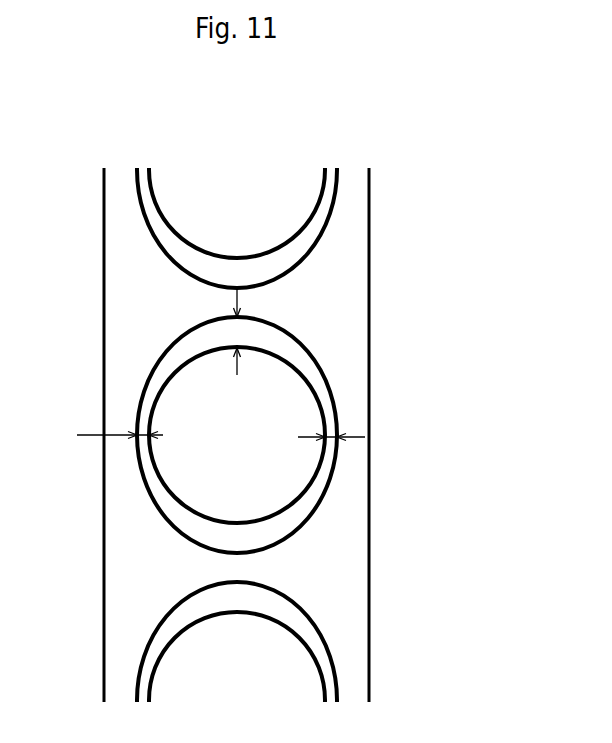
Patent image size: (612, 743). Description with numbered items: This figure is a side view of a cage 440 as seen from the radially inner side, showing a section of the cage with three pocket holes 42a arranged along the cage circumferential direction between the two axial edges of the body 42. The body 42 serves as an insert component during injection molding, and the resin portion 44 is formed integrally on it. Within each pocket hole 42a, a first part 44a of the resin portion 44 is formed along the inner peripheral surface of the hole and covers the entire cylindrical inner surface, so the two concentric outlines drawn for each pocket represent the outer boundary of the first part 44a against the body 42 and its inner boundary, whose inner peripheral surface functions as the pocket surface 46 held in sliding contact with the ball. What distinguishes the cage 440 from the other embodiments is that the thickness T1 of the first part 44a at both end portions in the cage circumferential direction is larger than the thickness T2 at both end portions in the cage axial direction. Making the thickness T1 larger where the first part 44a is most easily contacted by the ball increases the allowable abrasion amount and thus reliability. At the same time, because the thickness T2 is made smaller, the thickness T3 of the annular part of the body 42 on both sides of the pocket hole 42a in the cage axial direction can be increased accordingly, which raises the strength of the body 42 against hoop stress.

The body 42 is at (234, 397).
The pocket hole 42a is at (190, 217).
The resin portion 44 is at (234, 397).
The first part 44a is at (283, 262).
The pocket surface 46 is at (313, 212).
The cage 440 is at (374, 211).
The thickness T1 is at (237, 330).
The thickness T2 is at (330, 438).
The thickness T3 is at (120, 437).